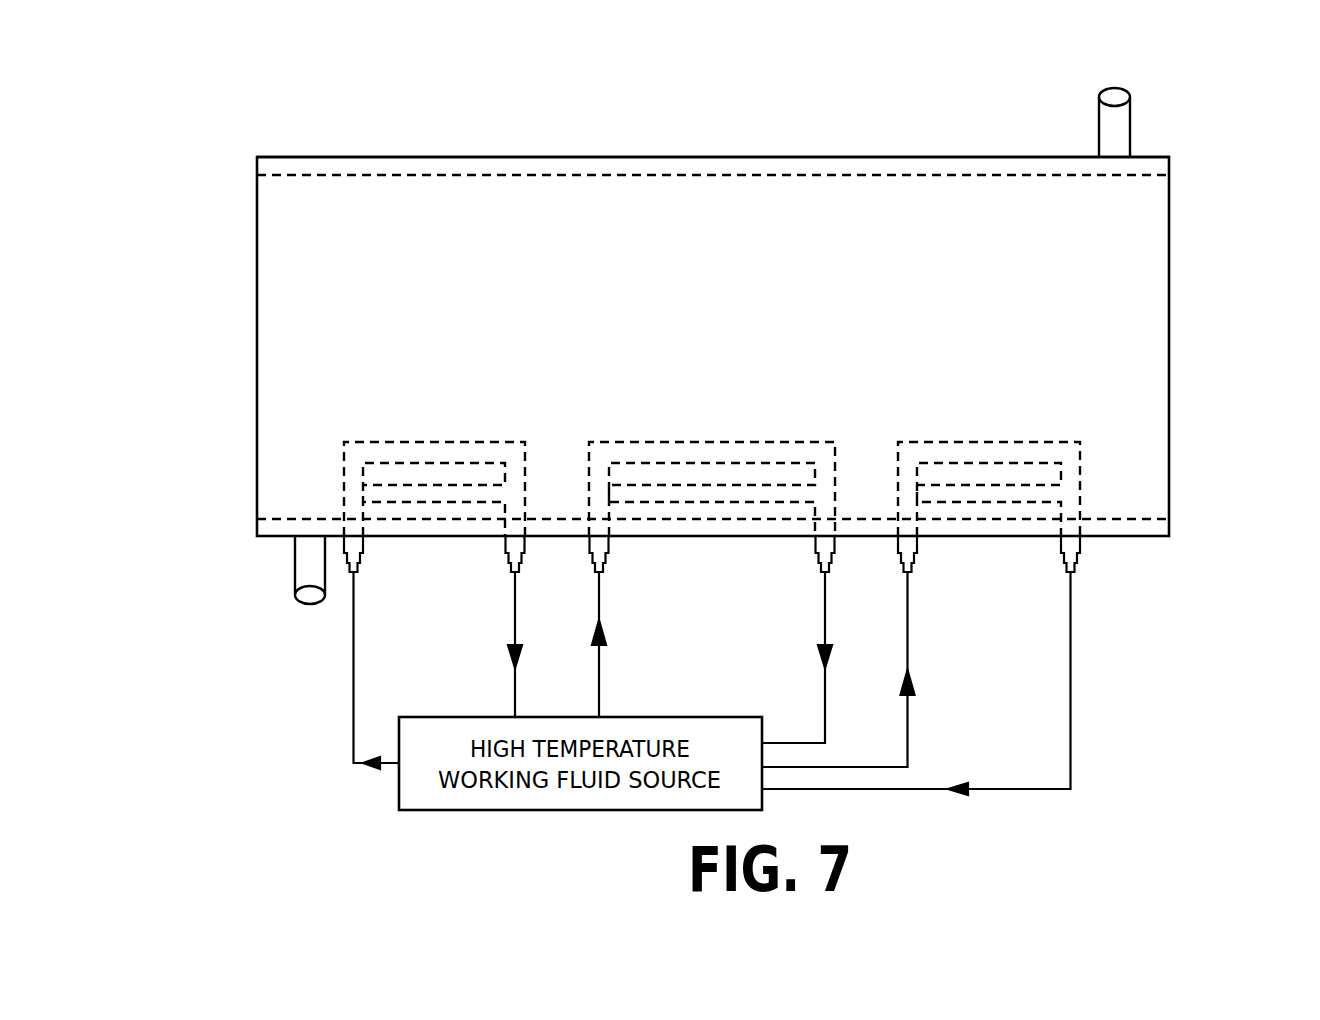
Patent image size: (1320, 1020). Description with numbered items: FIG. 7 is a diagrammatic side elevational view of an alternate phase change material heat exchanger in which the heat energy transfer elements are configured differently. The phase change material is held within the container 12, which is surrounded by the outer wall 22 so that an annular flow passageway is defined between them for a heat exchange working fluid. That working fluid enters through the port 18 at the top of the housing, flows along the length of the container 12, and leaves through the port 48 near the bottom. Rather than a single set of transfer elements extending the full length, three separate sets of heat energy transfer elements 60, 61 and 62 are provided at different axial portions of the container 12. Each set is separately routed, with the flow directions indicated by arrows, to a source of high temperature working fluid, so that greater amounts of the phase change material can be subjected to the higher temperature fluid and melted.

The container 12 is at (628, 175).
The outer wall 22 is at (492, 157).
The port 18 is at (1122, 130).
The port 48 is at (305, 566).
The heat energy transfer elements 60 is at (484, 423).
The heat energy transfer elements 61 is at (805, 409).
The heat energy transfer elements 62 is at (1030, 416).